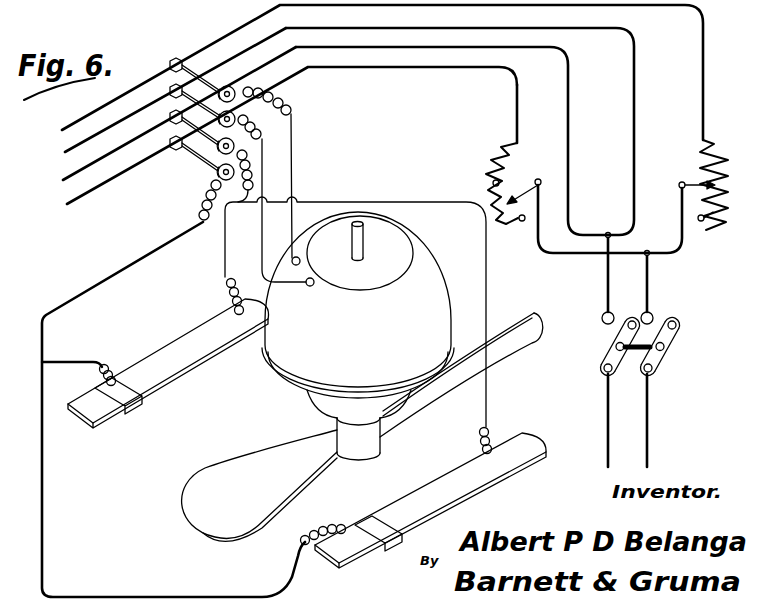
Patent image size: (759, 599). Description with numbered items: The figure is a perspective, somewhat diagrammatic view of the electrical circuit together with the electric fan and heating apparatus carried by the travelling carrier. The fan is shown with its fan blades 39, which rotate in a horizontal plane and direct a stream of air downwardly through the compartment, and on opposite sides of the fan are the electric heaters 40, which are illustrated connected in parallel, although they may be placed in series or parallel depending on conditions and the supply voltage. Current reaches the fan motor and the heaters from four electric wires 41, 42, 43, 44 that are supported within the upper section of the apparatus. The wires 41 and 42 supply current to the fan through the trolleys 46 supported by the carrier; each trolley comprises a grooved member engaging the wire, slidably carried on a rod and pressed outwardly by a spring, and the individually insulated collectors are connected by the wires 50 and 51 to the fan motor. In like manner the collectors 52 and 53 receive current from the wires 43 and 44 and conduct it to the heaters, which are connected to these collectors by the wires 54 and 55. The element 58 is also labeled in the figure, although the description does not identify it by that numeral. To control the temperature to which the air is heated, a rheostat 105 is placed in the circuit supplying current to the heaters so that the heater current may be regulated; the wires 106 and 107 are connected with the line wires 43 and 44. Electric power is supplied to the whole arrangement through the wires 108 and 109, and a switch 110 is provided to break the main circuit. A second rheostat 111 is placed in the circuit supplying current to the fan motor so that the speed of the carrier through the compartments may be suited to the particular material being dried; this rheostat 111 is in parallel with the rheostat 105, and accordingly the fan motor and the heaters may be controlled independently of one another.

The fan blades 39 is at (531, 315).
The electric heaters 40 is at (175, 368).
The electric wire 41 is at (62, 131).
The electric wire 42 is at (65, 153).
The electric wire 43 is at (63, 181).
The electric wire 44 is at (67, 204).
The trolleys 46 is at (196, 110).
The wire 50 is at (296, 133).
The wire 51 is at (264, 167).
The collector 52 is at (170, 143).
The collector 53 is at (182, 146).
The wire 54 is at (240, 198).
The wire 55 is at (186, 228).
The heater dome 58 is at (297, 389).
The rheostat 105 is at (492, 180).
The wire 106 is at (561, 55).
The wire 107 is at (515, 97).
The wire 108 is at (608, 400).
The wire 109 is at (648, 393).
The switch 110 is at (662, 352).
The rheostat 111 is at (709, 230).